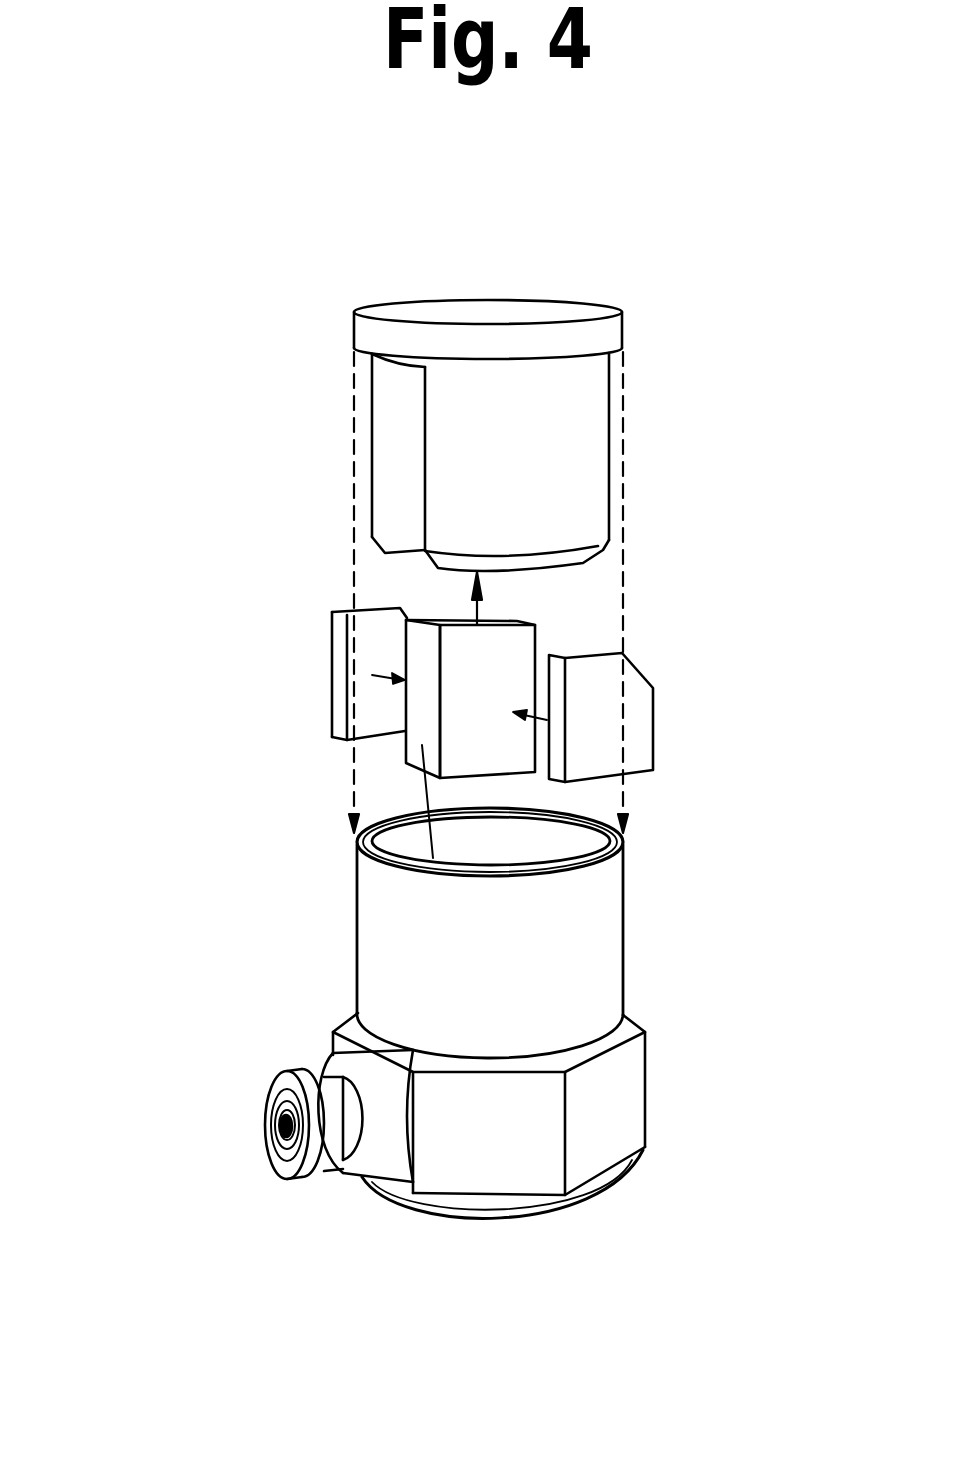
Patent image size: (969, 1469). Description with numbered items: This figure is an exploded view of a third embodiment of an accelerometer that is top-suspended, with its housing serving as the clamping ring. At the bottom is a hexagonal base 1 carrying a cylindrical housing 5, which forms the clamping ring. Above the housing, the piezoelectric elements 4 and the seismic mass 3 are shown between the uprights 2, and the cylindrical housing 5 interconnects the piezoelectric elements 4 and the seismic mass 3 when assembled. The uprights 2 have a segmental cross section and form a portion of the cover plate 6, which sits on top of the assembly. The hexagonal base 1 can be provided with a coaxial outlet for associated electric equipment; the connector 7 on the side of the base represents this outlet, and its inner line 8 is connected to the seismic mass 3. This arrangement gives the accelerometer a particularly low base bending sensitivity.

The hexagonal base 1 is at (468, 1190).
The uprights 2 is at (378, 482).
The seismic mass 3 is at (405, 747).
The piezoelectric elements 4 is at (408, 620).
The cylindrical housing 5 is at (368, 950).
The cover plate 6 is at (365, 325).
The connector 7 is at (272, 1150).
The inner line 8 is at (428, 787).